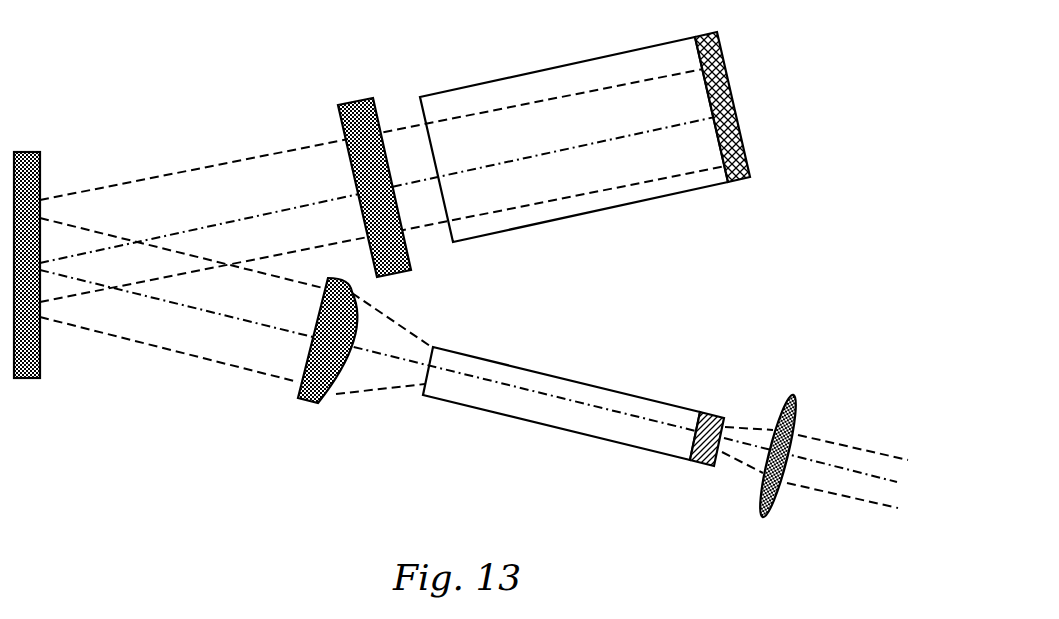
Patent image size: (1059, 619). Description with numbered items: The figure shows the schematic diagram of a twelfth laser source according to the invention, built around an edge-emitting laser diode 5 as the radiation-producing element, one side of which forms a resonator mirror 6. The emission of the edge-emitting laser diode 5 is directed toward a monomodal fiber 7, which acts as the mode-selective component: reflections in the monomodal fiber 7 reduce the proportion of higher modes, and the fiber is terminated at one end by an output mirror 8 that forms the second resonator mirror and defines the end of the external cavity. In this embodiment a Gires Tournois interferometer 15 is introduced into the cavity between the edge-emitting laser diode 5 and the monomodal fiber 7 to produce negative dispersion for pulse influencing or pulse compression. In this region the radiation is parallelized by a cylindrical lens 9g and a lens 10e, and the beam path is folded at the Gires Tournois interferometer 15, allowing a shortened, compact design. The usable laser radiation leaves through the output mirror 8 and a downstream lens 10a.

The Gires Tournois interferometer 15 is at (40, 160).
The cylindrical lens 9g is at (356, 122).
The edge-emitting laser diode 5 is at (558, 208).
The resonator mirror 6 is at (730, 97).
The monomodal fiber 7 is at (532, 380).
The output mirror 8 is at (700, 460).
The lens 10e is at (323, 373).
The lens 10a is at (795, 393).